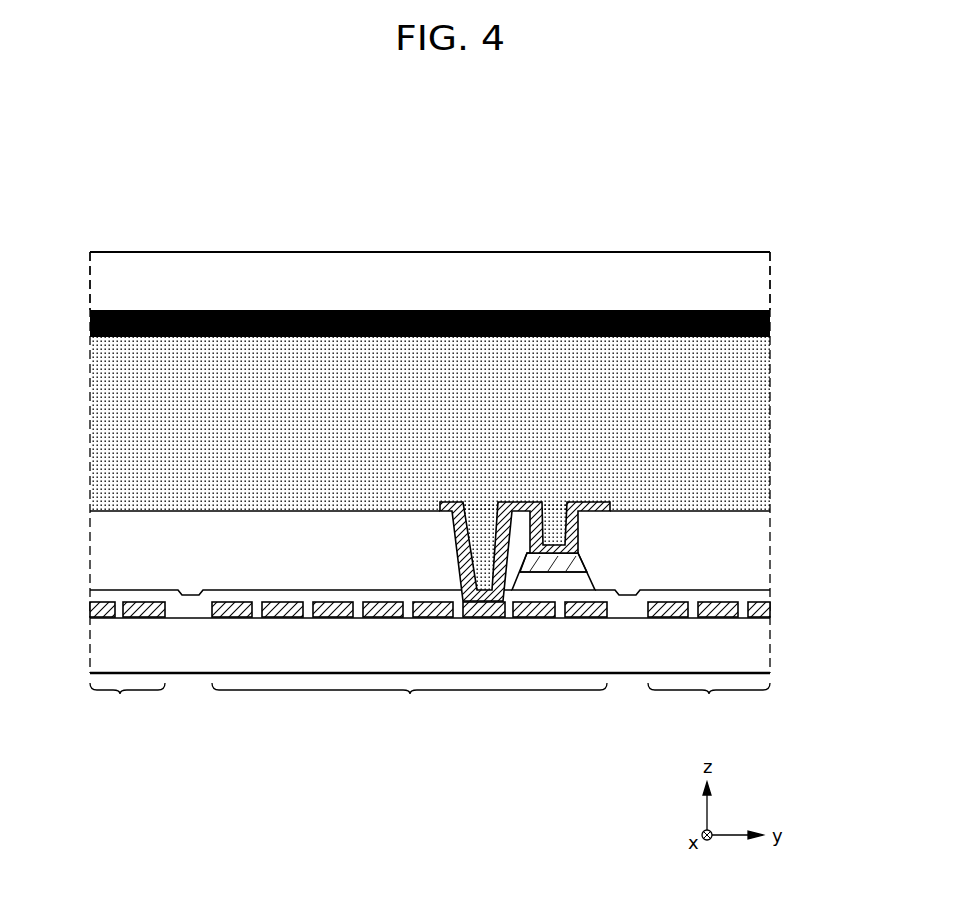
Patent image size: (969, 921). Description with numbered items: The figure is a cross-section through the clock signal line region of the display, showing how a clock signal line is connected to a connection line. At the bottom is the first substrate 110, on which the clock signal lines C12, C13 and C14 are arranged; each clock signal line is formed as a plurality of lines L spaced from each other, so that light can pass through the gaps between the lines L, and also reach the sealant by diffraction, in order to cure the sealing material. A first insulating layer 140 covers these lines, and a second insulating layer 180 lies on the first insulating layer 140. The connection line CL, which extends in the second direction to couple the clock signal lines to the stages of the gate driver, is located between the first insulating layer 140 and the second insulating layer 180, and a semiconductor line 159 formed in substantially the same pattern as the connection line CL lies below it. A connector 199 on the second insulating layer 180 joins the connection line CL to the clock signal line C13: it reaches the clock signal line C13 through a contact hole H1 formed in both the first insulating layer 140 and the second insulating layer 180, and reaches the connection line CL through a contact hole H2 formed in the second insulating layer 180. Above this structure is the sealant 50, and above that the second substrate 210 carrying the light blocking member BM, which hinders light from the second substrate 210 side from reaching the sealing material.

The second substrate 210 is at (768, 280).
The light blocking member BM is at (770, 323).
The sealant 50 is at (765, 423).
The second insulating layer 180 is at (766, 550).
The first insulating layer 140 is at (768, 597).
The first substrate 110 is at (768, 649).
The connector 199 is at (463, 508).
The contact hole H1 is at (477, 512).
The contact hole H2 is at (545, 517).
The lines L is at (242, 608).
The connection line CL is at (545, 565).
The semiconductor line 159 is at (570, 580).
The clock signal line C12 is at (127, 704).
The clock signal line C13 is at (409, 704).
The clock signal line C14 is at (709, 704).